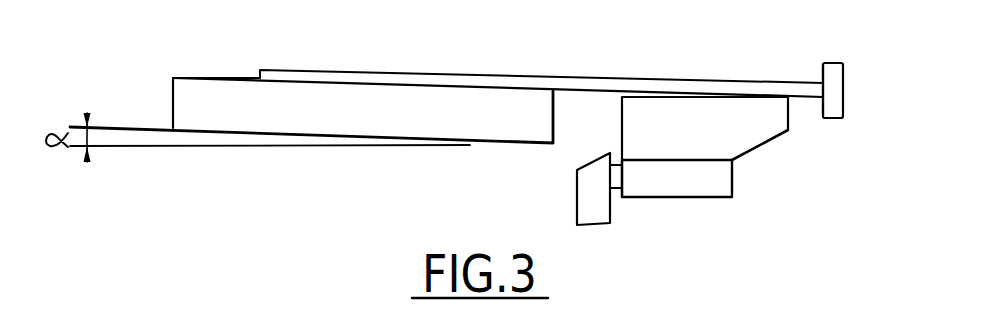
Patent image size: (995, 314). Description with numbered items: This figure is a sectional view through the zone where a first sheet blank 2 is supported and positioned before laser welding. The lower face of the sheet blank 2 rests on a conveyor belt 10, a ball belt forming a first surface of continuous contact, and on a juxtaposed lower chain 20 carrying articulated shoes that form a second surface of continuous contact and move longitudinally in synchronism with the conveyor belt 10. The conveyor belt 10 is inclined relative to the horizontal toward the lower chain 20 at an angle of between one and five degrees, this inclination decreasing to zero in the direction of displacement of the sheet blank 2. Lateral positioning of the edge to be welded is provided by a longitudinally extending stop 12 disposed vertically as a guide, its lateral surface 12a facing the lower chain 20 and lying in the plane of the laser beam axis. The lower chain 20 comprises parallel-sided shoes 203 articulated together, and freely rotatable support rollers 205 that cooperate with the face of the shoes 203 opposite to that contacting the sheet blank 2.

The sheet blank 2 is at (372, 80).
The conveyor belt 10 is at (413, 126).
The stop 12 is at (837, 78).
The lateral surface 12a is at (823, 72).
The lower chain 20 is at (703, 173).
The shoes 203 is at (757, 129).
The support rollers 205 is at (694, 182).